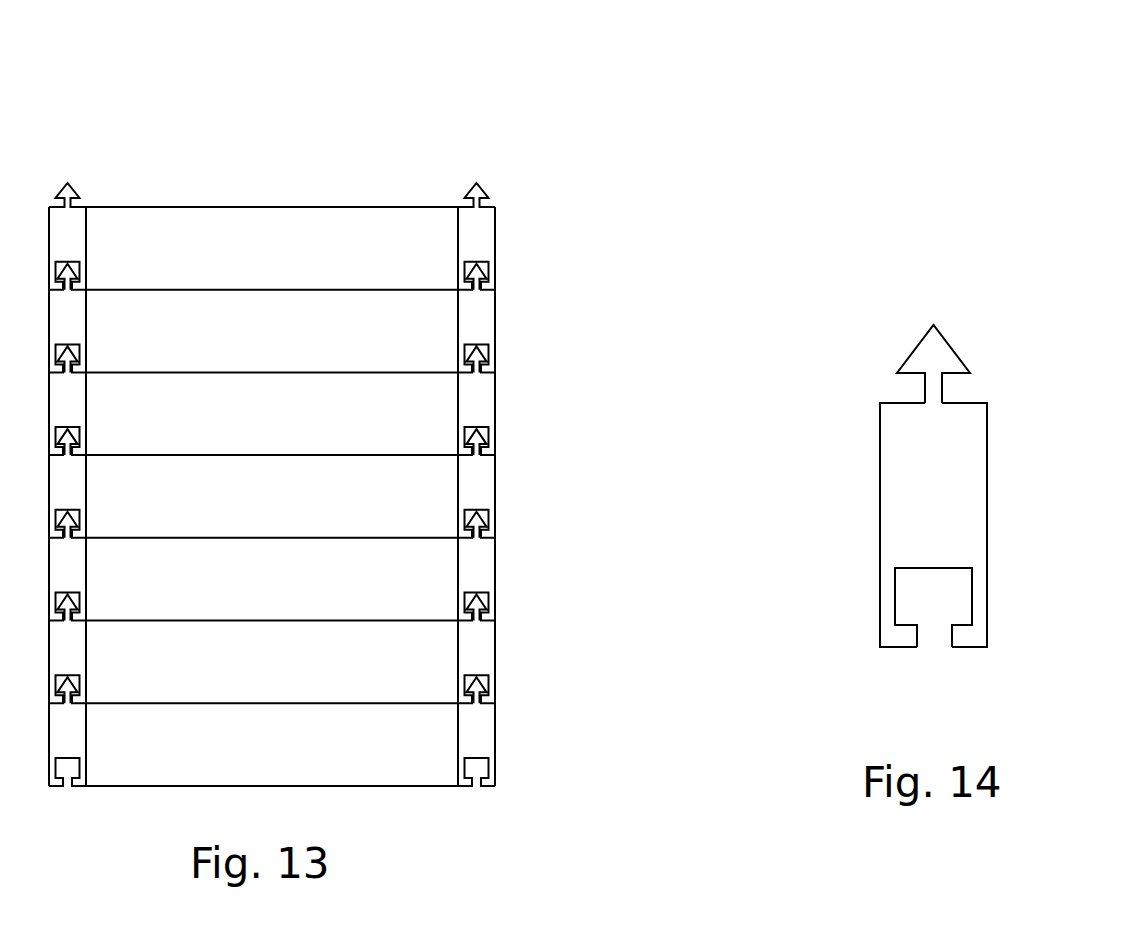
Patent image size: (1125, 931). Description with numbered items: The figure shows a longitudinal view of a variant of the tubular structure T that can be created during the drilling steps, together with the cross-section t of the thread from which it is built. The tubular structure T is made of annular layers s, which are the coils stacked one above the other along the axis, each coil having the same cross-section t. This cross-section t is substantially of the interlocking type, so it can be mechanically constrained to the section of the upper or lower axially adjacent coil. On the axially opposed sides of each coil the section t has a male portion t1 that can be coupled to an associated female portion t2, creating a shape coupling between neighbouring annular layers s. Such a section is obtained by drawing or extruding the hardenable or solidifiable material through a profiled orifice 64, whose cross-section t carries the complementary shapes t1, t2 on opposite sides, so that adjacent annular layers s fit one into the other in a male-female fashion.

In FIG. 13, the tubular structure T is at (310, 433).
In FIG. 13, the annular layers s is at (372, 207).
In FIG. 13, the cross-section t is at (497, 228).
In FIG. 14, the cross-section t is at (990, 482).
In FIG. 14, the profiled orifice 64 is at (939, 482).
In FIG. 14, the male portion t1 is at (943, 345).
In FIG. 14, the female portion t2 is at (898, 597).